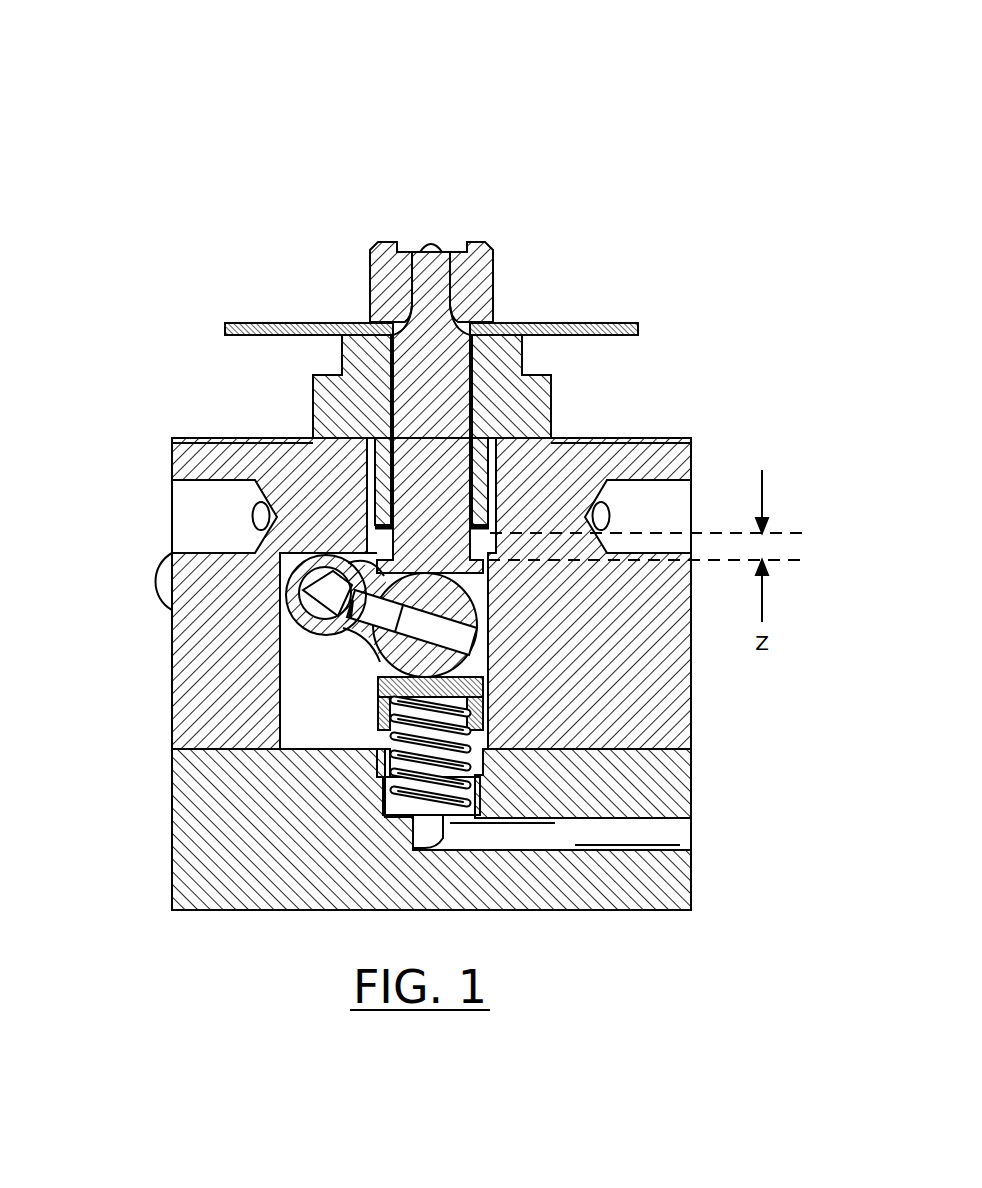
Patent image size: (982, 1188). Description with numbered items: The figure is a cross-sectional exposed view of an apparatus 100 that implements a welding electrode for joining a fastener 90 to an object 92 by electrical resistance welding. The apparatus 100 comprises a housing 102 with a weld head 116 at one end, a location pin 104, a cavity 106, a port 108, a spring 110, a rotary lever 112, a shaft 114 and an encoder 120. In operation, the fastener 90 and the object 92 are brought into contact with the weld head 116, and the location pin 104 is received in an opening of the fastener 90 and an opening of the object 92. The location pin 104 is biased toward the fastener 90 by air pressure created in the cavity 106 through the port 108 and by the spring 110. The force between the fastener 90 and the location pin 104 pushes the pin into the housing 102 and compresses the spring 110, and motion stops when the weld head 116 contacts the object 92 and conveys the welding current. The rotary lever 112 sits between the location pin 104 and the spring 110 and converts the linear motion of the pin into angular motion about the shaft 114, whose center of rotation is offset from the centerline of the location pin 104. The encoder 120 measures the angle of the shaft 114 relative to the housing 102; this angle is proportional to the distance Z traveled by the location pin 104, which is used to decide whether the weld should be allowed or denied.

The apparatus 100 is at (388, 57).
The housing 102 is at (172, 463).
The location pin 104 is at (432, 243).
The cavity 106 is at (308, 723).
The port 108 is at (691, 837).
The spring 110 is at (383, 768).
The rotary lever 112 is at (293, 560).
The shaft 114 is at (317, 612).
The weld head 116 is at (522, 353).
The encoder 120 is at (313, 407).
The fastener 90 is at (480, 243).
The object 92 is at (600, 323).